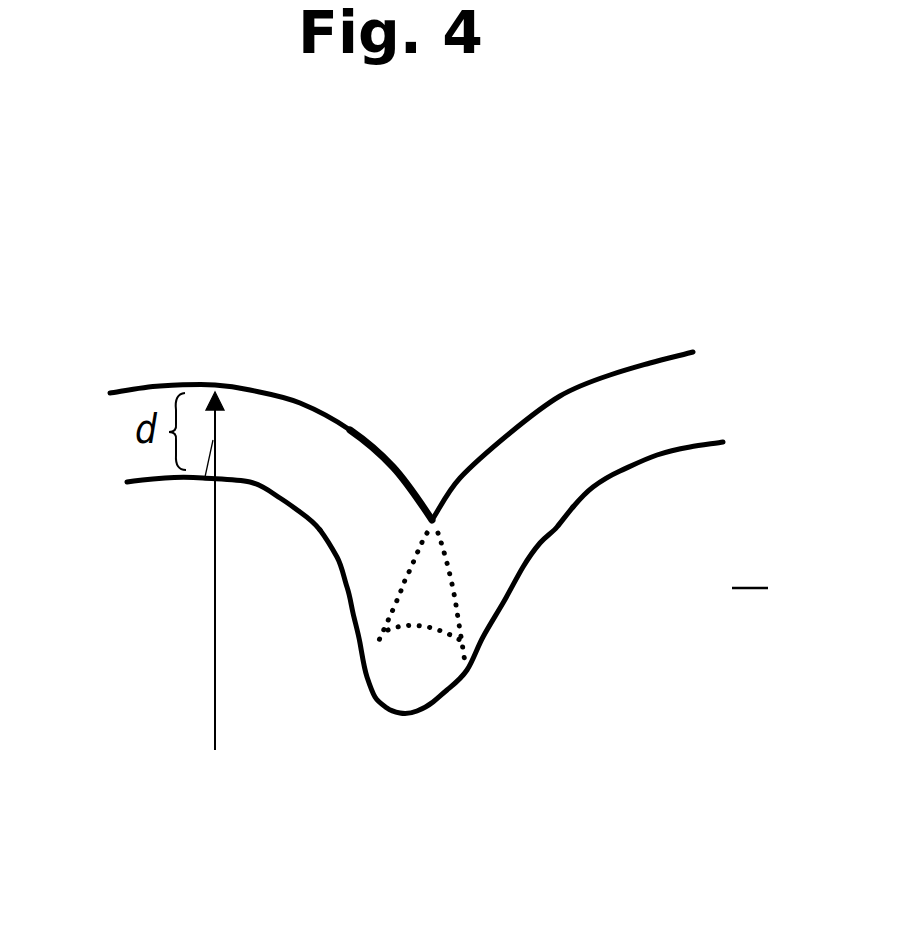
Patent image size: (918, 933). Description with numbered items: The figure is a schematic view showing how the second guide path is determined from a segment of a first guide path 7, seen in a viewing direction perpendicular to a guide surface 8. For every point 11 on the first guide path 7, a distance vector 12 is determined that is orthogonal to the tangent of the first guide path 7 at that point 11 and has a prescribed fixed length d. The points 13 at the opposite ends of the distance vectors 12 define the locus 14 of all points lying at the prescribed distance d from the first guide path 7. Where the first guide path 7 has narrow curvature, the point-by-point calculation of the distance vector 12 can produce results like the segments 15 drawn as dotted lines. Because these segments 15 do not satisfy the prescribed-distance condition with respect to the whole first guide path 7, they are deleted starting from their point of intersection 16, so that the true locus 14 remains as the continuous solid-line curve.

The first guide path 7 is at (447, 701).
The guide surface 8 is at (750, 569).
The point on the first guide path 11 is at (203, 478).
The distance vector 12 is at (205, 603).
The point at the opposite end of the distance vector 13 is at (215, 386).
The locus 14 is at (610, 372).
The segments 15 is at (408, 441).
The point of intersection 16 is at (432, 517).